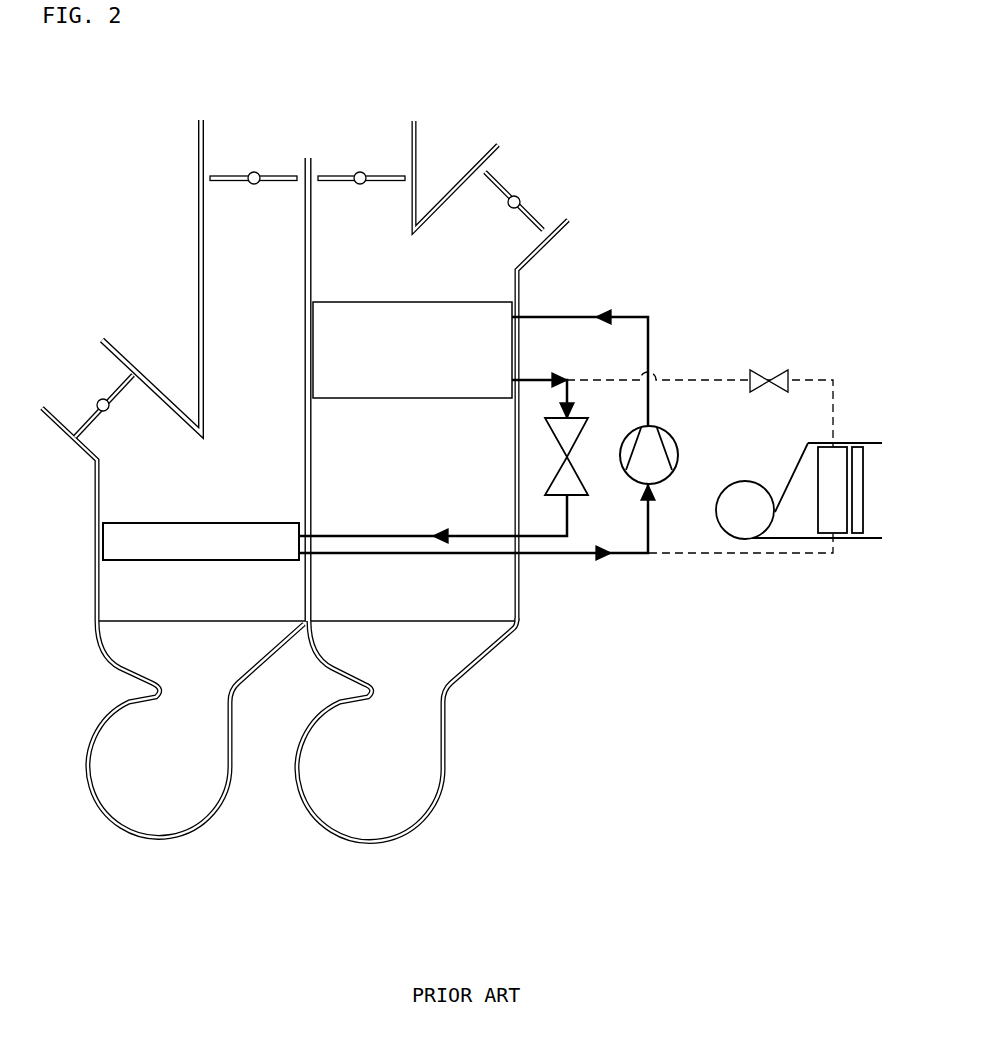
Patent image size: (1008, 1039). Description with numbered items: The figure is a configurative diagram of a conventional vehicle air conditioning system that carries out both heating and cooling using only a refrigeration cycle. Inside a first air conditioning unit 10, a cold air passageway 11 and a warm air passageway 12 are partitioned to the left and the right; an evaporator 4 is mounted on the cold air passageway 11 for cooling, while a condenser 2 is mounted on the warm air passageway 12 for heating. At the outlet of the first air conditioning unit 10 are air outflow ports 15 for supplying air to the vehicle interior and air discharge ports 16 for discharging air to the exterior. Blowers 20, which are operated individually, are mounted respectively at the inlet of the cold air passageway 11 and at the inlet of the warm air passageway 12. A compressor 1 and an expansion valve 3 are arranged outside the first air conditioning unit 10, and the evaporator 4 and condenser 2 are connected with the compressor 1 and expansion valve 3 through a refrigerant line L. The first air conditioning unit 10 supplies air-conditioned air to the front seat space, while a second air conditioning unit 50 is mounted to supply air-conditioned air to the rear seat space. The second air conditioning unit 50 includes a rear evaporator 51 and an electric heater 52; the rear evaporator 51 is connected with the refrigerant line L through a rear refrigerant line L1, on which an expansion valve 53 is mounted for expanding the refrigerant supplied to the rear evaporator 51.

The compressor 1 is at (678, 452).
The condenser 2 is at (478, 312).
The expansion valve 3 is at (580, 437).
The evaporator 4 is at (148, 548).
The first air conditioning unit 10 is at (533, 605).
The cold air passageway 11 is at (172, 507).
The warm air passageway 12 is at (432, 482).
The air outflow ports 15 is at (255, 160).
The air discharge ports 16 is at (540, 185).
The blowers 20 is at (161, 841).
The second air conditioning unit 50 is at (799, 515).
The rear evaporator 51 is at (827, 548).
The electric heater 52 is at (858, 455).
The expansion valve 53 is at (778, 370).
The refrigerant line L is at (650, 325).
The rear refrigerant line L1 is at (710, 378).